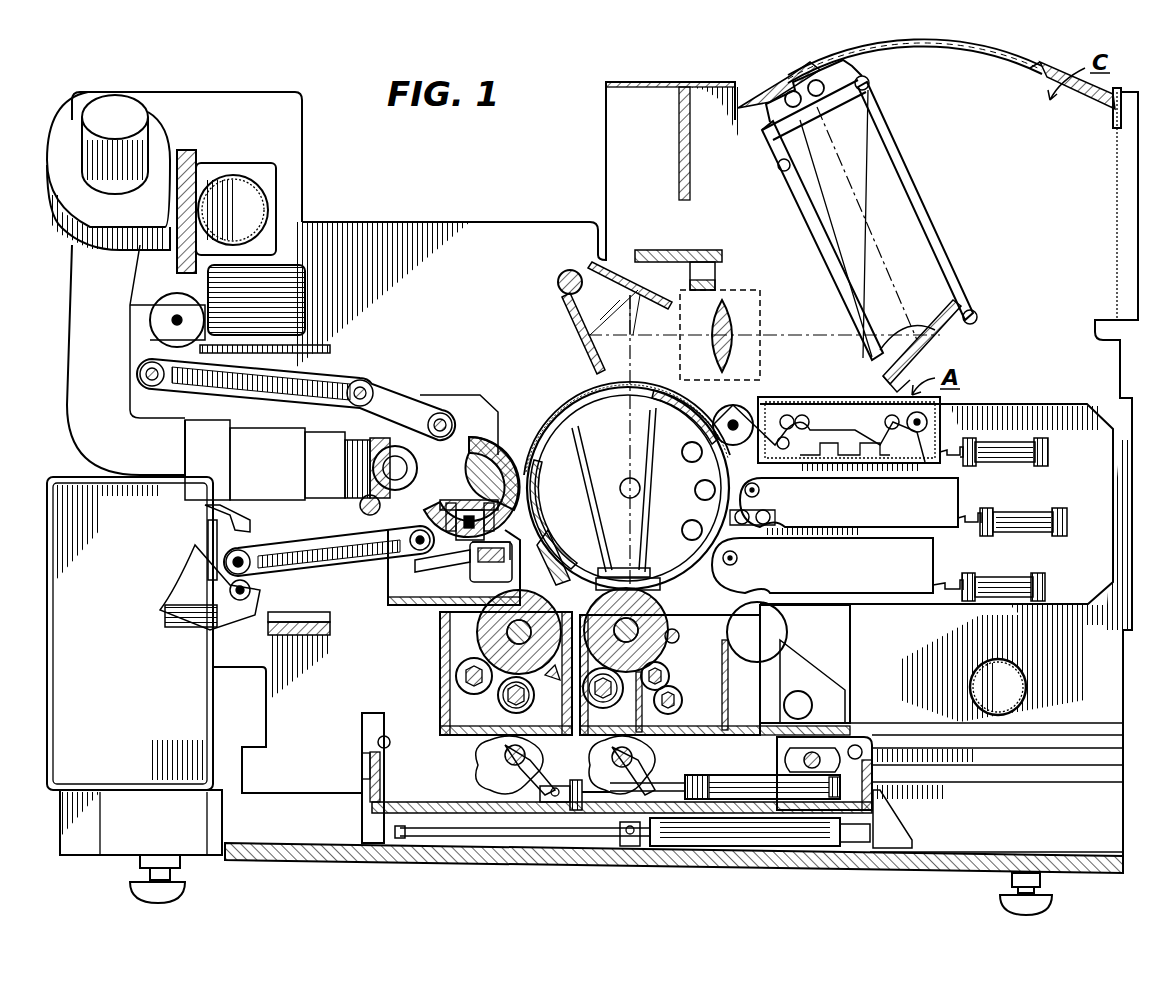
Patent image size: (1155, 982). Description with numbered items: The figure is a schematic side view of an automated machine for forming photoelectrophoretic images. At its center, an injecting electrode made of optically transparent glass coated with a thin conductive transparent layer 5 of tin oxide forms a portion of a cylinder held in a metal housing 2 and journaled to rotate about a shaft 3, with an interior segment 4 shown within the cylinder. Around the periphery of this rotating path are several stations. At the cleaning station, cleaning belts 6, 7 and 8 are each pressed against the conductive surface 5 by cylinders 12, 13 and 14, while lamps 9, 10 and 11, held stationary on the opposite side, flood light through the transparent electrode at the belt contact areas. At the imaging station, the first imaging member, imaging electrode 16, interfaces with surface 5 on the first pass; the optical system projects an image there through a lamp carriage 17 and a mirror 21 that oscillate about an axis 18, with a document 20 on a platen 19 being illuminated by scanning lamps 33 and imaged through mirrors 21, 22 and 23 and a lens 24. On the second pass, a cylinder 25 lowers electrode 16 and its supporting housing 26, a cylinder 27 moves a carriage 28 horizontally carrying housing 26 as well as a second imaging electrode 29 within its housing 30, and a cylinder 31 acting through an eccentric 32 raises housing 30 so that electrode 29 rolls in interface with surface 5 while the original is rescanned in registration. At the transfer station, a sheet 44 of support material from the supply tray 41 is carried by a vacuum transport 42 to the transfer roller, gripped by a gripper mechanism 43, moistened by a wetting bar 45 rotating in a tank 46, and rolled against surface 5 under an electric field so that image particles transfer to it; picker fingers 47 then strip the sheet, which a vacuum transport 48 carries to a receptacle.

The housing 2 is at (664, 402).
The shaft 3 is at (622, 470).
The wedge-shaped slot 4 is at (540, 445).
The optically transparent layer 5 is at (590, 392).
The belt 6 is at (716, 408).
The belt 7 is at (748, 480).
The belt 8 is at (730, 590).
The lamp 9 is at (682, 445).
The lamp 10 is at (694, 488).
The lamp 11 is at (684, 526).
The cylinder 12 is at (1003, 425).
The cylinder 13 is at (1022, 493).
The cylinder 14 is at (1015, 559).
The imaging electrode 16 is at (650, 588).
The lamp carriage 17 is at (922, 210).
The axis 18 is at (906, 328).
The platen 19 is at (912, 45).
The document 20 is at (1012, 55).
The mirror 21 is at (880, 375).
The mirror 22 is at (576, 322).
The mirror 23 is at (644, 300).
The lens 24 is at (760, 302).
The cylinder 25 is at (768, 778).
The housing 26 is at (660, 735).
The cylinder 27 is at (752, 850).
The carriage 28 is at (366, 786).
The imaging electrode 29 is at (478, 633).
The housing 30 is at (440, 692).
The cylinder 31 is at (568, 812).
The eccentric 32 is at (490, 768).
The scanning lamps 33 is at (818, 100).
The supply tray 41 is at (46, 505).
The vacuum transport 42 is at (332, 562).
The gripper mechanism 43 is at (450, 548).
The sheet 44 is at (195, 580).
The wetting bar 45 is at (476, 572).
The tank 46 is at (496, 598).
The picker fingers 47 is at (476, 432).
The vacuum transport 48 is at (390, 360).